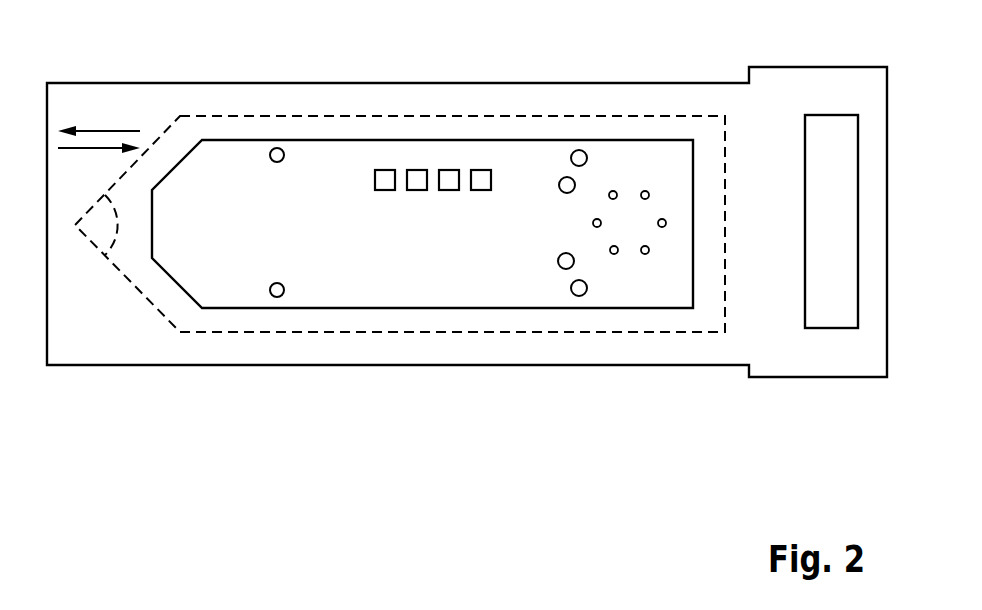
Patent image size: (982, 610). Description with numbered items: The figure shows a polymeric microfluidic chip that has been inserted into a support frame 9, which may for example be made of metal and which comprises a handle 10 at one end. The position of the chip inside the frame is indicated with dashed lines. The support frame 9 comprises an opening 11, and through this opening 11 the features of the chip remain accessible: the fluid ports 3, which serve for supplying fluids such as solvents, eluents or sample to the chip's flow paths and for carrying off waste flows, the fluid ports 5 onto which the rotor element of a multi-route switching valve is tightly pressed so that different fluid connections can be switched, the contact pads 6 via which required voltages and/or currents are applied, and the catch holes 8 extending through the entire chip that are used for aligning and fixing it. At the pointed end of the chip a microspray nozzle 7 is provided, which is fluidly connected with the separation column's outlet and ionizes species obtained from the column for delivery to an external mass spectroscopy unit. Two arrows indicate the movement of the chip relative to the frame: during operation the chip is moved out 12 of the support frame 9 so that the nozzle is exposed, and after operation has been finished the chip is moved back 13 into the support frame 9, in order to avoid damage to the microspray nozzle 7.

The fluid ports 3 is at (565, 177).
The fluid ports 5 is at (663, 219).
The contact pads 6 is at (481, 170).
The microspray nozzle 7 is at (92, 238).
The catch holes 8 is at (277, 148).
The support frame 9 is at (143, 352).
The handle 10 is at (828, 363).
The opening 11 is at (415, 307).
The moving out 12 is at (110, 128).
The moving back 13 is at (90, 148).